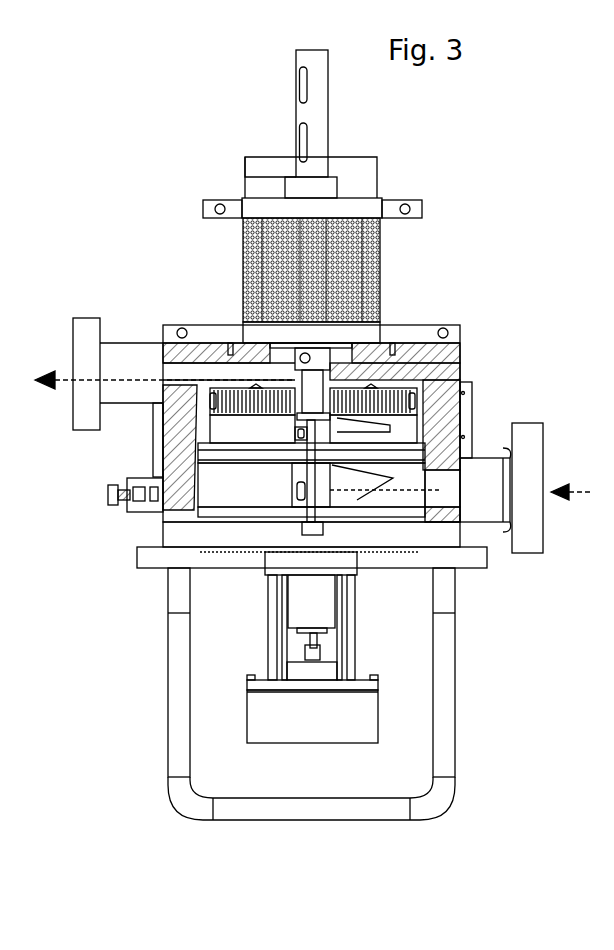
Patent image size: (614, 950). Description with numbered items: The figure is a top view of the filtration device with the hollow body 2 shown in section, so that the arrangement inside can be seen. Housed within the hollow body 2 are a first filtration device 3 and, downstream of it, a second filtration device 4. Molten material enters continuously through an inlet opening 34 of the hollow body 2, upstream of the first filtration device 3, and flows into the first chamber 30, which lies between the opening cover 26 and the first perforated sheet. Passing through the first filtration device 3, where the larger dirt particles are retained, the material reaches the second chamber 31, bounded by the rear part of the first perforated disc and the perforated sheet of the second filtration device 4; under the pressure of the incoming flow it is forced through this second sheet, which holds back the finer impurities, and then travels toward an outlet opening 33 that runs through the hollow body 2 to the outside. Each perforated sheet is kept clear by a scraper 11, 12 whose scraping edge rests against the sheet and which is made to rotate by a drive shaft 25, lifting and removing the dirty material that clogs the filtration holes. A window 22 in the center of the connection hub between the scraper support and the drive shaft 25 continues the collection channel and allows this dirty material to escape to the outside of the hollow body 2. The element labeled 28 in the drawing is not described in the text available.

The hollow body 2 is at (450, 512).
The first filtration device 3 is at (223, 435).
The second filtration device 4 is at (212, 404).
The scraper 11 is at (420, 455).
The scraper 12 is at (392, 425).
The window 22 is at (293, 493).
The drive shaft 25 is at (327, 378).
The opening cover 26 is at (227, 532).
The counterweight 28 is at (257, 710).
The first chamber 30 is at (218, 486).
The second chamber 31 is at (215, 418).
The outlet opening 33 is at (173, 368).
The inlet opening 34 is at (486, 470).